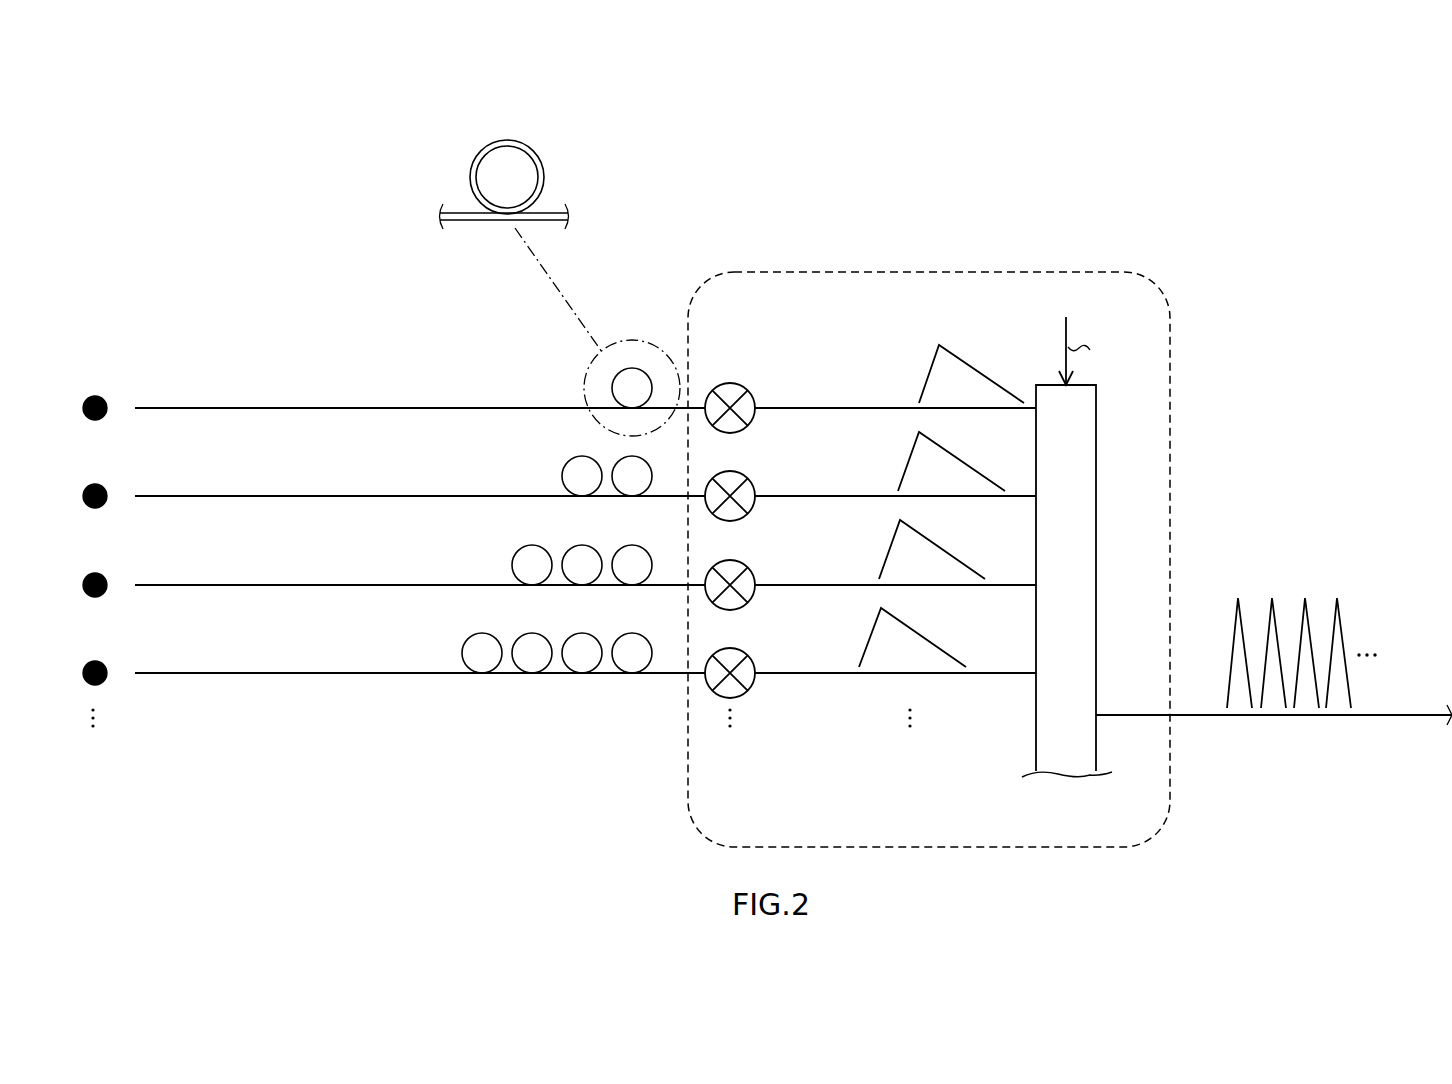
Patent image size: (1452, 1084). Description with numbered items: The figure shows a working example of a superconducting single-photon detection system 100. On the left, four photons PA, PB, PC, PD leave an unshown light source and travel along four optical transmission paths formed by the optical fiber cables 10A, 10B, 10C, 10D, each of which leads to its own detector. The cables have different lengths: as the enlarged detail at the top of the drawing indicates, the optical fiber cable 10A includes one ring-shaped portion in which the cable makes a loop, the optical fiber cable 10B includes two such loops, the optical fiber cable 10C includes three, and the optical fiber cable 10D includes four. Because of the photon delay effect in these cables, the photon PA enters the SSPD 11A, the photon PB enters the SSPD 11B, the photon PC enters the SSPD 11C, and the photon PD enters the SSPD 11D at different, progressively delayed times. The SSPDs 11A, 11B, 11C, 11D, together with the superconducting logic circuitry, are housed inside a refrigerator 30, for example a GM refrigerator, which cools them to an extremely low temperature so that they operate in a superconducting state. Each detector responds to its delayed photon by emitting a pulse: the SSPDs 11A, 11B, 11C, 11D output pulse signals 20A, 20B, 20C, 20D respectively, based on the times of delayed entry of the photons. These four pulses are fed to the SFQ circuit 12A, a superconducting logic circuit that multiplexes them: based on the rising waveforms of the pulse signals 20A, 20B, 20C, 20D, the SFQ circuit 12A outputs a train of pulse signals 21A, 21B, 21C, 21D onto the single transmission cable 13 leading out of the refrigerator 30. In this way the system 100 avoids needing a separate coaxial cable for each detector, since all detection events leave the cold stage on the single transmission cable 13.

The superconducting single-photon detection system 100 is at (1172, 163).
The photon PA is at (105, 400).
The photon PB is at (105, 488).
The photon PC is at (105, 577).
The photon PD is at (105, 665).
The optical fiber cable 10A is at (348, 407).
The optical fiber cable 10B is at (348, 495).
The optical fiber cable 10C is at (348, 584).
The optical fiber cable 10D is at (348, 672).
The SSPD 11A is at (757, 398).
The SSPD 11B is at (757, 486).
The SSPD 11C is at (757, 575).
The SSPD 11D is at (757, 663).
The pulse signal 20A is at (993, 380).
The pulse signal 20B is at (973, 469).
The pulse signal 20C is at (954, 557).
The pulse signal 20D is at (935, 646).
The refrigerator 30 is at (1055, 270).
The SFQ circuit 12A is at (1092, 729).
The single transmission cable 13 is at (1405, 714).
The pulse signal 21A is at (1235, 635).
The pulse signal 21B is at (1268, 633).
The pulse signal 21C is at (1298, 632).
The pulse signal 21D is at (1333, 632).